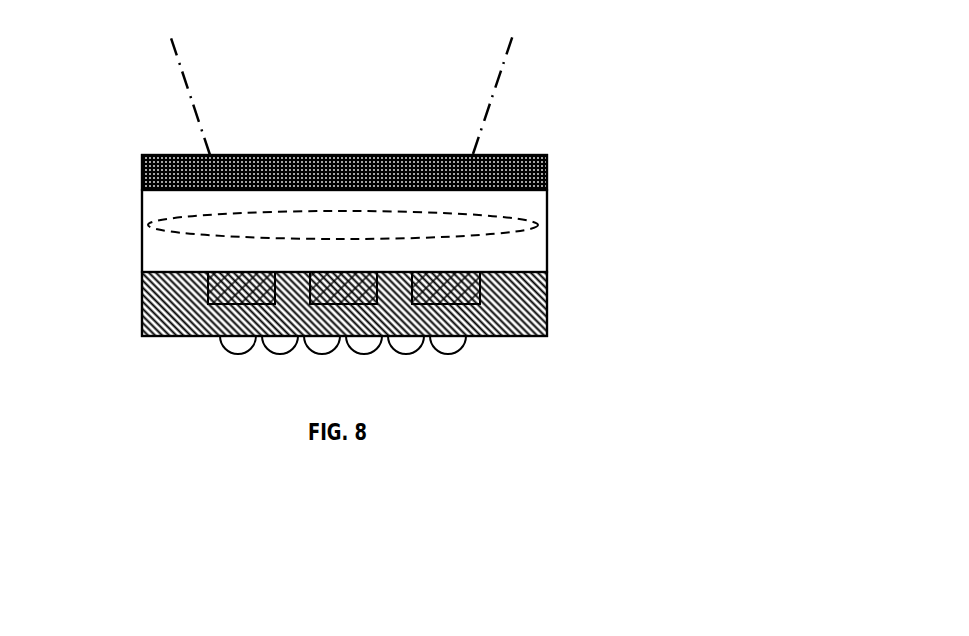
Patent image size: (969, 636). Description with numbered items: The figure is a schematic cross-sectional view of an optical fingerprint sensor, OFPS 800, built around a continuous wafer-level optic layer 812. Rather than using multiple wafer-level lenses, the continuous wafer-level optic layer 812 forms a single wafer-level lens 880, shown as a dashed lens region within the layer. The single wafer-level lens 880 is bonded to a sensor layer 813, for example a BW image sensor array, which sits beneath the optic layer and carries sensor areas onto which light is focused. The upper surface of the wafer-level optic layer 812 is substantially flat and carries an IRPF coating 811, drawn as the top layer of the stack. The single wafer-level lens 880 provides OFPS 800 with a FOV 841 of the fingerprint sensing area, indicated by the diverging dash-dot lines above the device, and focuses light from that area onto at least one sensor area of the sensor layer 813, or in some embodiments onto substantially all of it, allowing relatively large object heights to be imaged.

The OFPS 800 is at (692, 378).
The IRPF coating 811 is at (358, 181).
The continuous wafer-level optic layer 812 is at (570, 226).
The sensor layer 813 is at (547, 310).
The single wafer-level lens 880 is at (146, 224).
The FOV 841 is at (518, 86).